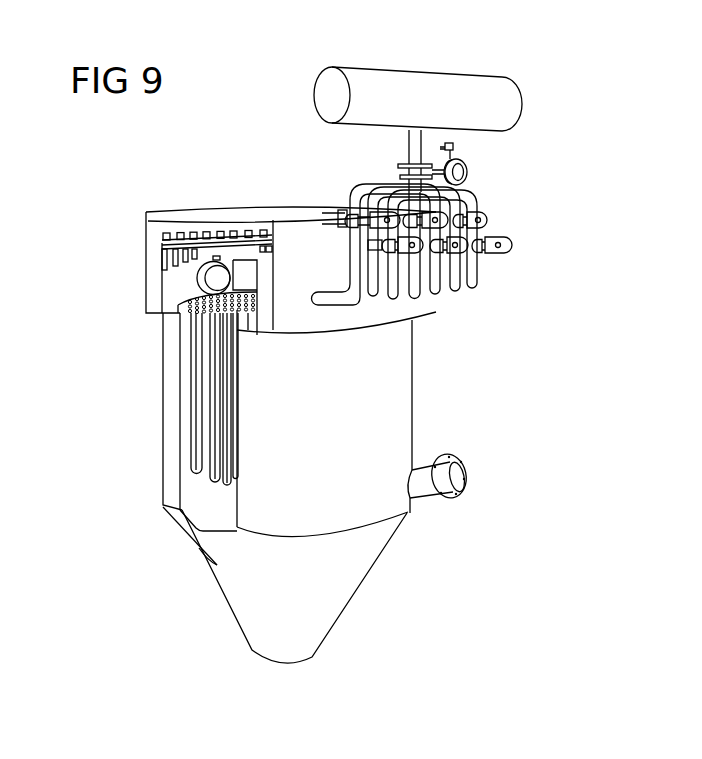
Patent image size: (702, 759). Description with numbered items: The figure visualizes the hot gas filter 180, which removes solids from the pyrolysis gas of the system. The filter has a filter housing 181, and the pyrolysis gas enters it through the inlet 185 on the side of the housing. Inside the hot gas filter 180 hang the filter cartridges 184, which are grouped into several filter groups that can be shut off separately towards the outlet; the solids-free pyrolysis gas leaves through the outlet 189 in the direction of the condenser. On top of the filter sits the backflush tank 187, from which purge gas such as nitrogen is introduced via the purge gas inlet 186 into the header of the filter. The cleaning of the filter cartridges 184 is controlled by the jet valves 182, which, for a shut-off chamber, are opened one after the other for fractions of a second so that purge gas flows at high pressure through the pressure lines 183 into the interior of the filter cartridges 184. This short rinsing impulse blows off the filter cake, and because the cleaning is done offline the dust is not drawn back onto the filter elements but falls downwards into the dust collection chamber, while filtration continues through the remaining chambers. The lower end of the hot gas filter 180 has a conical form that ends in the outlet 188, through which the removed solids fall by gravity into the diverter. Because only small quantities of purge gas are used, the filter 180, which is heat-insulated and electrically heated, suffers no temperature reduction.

The hot gas filter 180 is at (124, 248).
The filter housing 181 is at (395, 394).
The jet valves 182 is at (487, 216).
The pressure lines 183 is at (478, 288).
The filter cartridges 184 is at (207, 427).
The inlet 185 is at (428, 488).
The purge gas inlet 186 is at (400, 167).
The backflush tank 187 is at (463, 90).
The outlet 188 is at (297, 650).
The outlet 189 is at (218, 279).